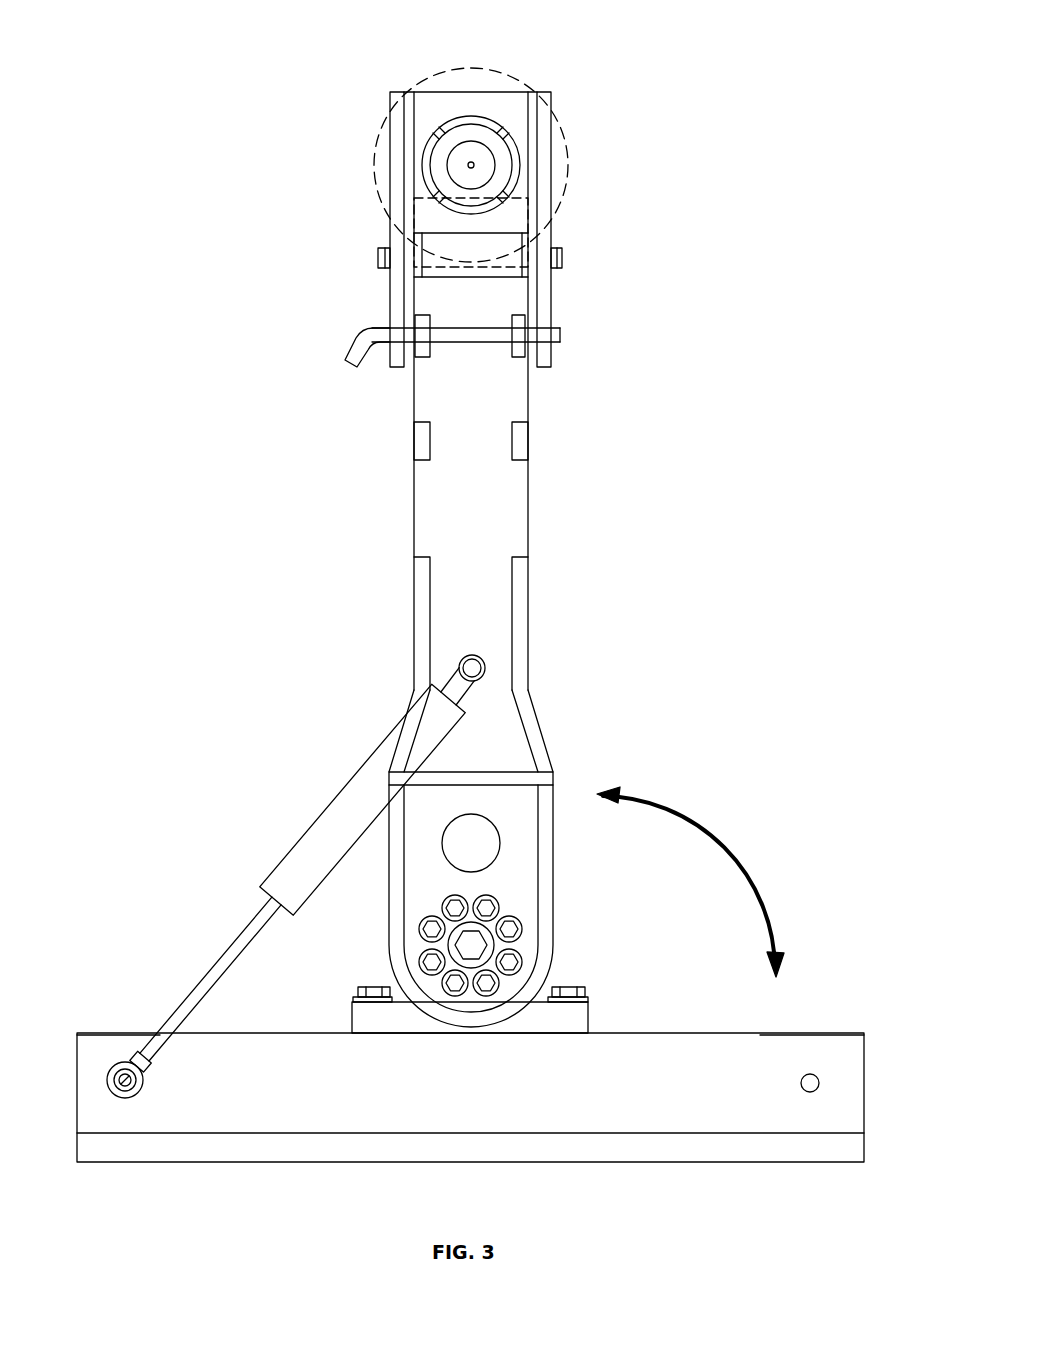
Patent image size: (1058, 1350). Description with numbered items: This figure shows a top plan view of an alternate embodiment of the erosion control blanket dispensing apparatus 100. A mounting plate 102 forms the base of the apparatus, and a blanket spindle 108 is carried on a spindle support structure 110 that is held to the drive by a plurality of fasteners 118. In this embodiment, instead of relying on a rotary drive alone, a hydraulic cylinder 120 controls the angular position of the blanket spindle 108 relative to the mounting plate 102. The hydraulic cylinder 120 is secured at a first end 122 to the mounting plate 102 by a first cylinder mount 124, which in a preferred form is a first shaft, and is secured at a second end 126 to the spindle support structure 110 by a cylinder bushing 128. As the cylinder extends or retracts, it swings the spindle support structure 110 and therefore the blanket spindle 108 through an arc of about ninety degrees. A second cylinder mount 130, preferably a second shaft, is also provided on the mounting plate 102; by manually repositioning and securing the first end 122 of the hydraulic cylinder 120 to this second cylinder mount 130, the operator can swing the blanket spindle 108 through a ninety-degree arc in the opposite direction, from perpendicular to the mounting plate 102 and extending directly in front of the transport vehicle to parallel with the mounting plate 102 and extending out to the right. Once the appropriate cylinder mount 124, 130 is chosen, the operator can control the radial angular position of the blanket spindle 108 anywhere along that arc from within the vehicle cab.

The apparatus 100 is at (602, 52).
The mounting plate 102 is at (737, 1121).
The blanket spindle 108 is at (495, 160).
The spindle support structure 110 is at (528, 513).
The fasteners 118 is at (487, 897).
The hydraulic cylinder 120 is at (262, 857).
The first end 122 is at (143, 1092).
The first cylinder mount 124 is at (113, 1093).
The second end 126 is at (478, 688).
The cylinder bushing 128 is at (473, 656).
The second cylinder mount 130 is at (818, 1078).